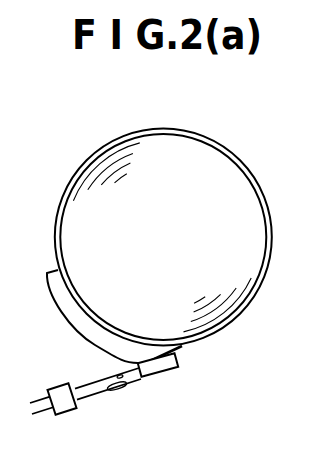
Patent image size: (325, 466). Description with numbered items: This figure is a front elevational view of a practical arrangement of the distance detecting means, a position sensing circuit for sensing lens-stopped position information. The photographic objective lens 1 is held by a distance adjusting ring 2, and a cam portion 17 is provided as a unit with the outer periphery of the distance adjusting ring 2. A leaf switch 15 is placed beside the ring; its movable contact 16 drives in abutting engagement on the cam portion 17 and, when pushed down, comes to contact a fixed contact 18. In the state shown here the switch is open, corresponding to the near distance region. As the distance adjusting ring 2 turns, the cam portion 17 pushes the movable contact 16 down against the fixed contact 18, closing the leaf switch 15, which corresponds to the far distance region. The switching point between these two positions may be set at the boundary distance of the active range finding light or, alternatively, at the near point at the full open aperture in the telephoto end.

The photographic objective lens 1 is at (242, 185).
The distance adjusting ring 2 is at (190, 133).
The leaf switch 15 is at (57, 390).
The movable contact 16 is at (97, 381).
The cam portion 17 is at (57, 303).
The fixed contact 18 is at (113, 392).